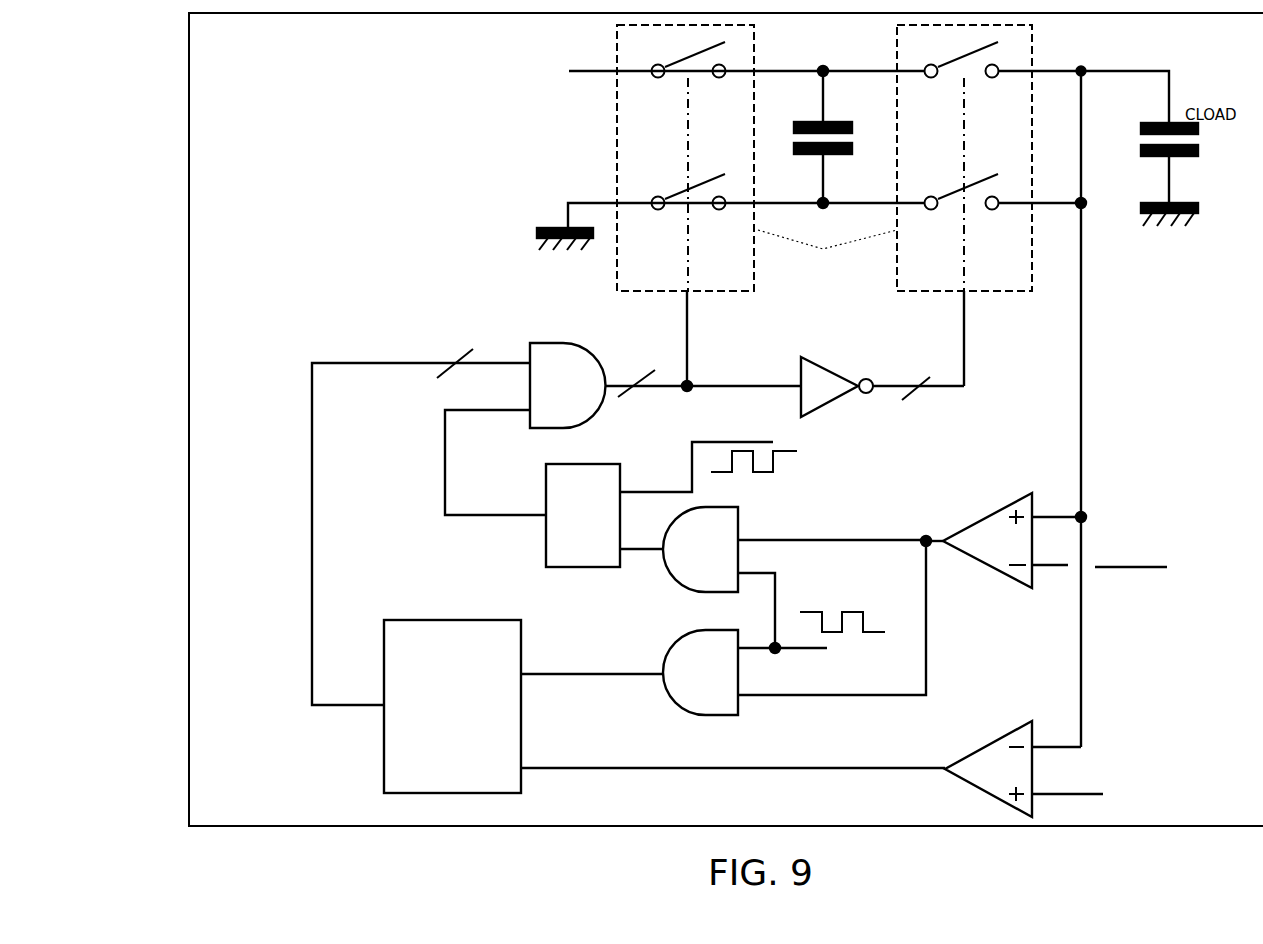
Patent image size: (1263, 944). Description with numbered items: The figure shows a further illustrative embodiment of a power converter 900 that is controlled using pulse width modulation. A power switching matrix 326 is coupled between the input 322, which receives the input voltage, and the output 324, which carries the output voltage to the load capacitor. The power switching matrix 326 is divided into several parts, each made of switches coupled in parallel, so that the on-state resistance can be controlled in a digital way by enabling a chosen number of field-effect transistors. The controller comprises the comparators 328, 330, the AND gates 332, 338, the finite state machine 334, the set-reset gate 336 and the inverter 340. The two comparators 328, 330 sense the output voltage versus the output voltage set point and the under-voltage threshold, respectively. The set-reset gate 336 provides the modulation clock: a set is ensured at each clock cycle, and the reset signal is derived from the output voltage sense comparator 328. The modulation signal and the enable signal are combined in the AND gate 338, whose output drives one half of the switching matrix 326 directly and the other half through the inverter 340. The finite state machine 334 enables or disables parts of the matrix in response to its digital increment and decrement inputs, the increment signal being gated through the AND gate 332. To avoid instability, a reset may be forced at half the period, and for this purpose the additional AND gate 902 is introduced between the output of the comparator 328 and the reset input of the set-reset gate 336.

The power converter 900 is at (123, 88).
The input 322 is at (583, 77).
The output 324 is at (1132, 77).
The power switching matrix 326 is at (809, 205).
The comparator 328 is at (988, 567).
The comparator 330 is at (967, 783).
The AND gate 332 is at (672, 643).
The finite state machine 334 is at (452, 618).
The set-reset gate 336 is at (545, 525).
The AND gate 338 is at (599, 413).
The inverter 340 is at (836, 400).
The additional AND gate 902 is at (740, 525).